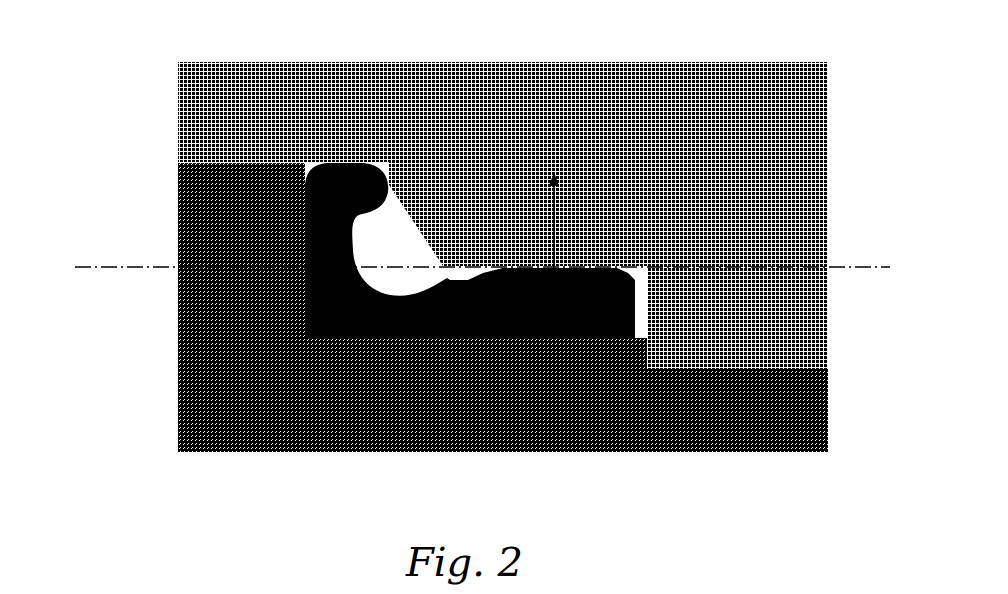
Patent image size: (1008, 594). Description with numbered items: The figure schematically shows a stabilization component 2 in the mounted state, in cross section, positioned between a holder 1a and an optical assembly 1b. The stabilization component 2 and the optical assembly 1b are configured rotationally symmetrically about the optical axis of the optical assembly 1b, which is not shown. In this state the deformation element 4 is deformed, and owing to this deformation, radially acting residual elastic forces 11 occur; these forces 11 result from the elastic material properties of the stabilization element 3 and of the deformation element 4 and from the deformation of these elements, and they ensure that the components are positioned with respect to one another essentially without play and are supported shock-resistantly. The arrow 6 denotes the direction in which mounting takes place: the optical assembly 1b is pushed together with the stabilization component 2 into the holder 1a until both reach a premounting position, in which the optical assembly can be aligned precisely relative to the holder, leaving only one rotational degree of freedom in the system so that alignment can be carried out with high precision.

The holder 1a is at (245, 95).
The optical assembly 1b is at (217, 412).
The stabilization component 2 is at (326, 152).
The stabilization element 3 is at (550, 340).
The deformation element 4 is at (586, 266).
The arrow 6 is at (144, 267).
The radially acting residual elastic forces 11 is at (553, 210).